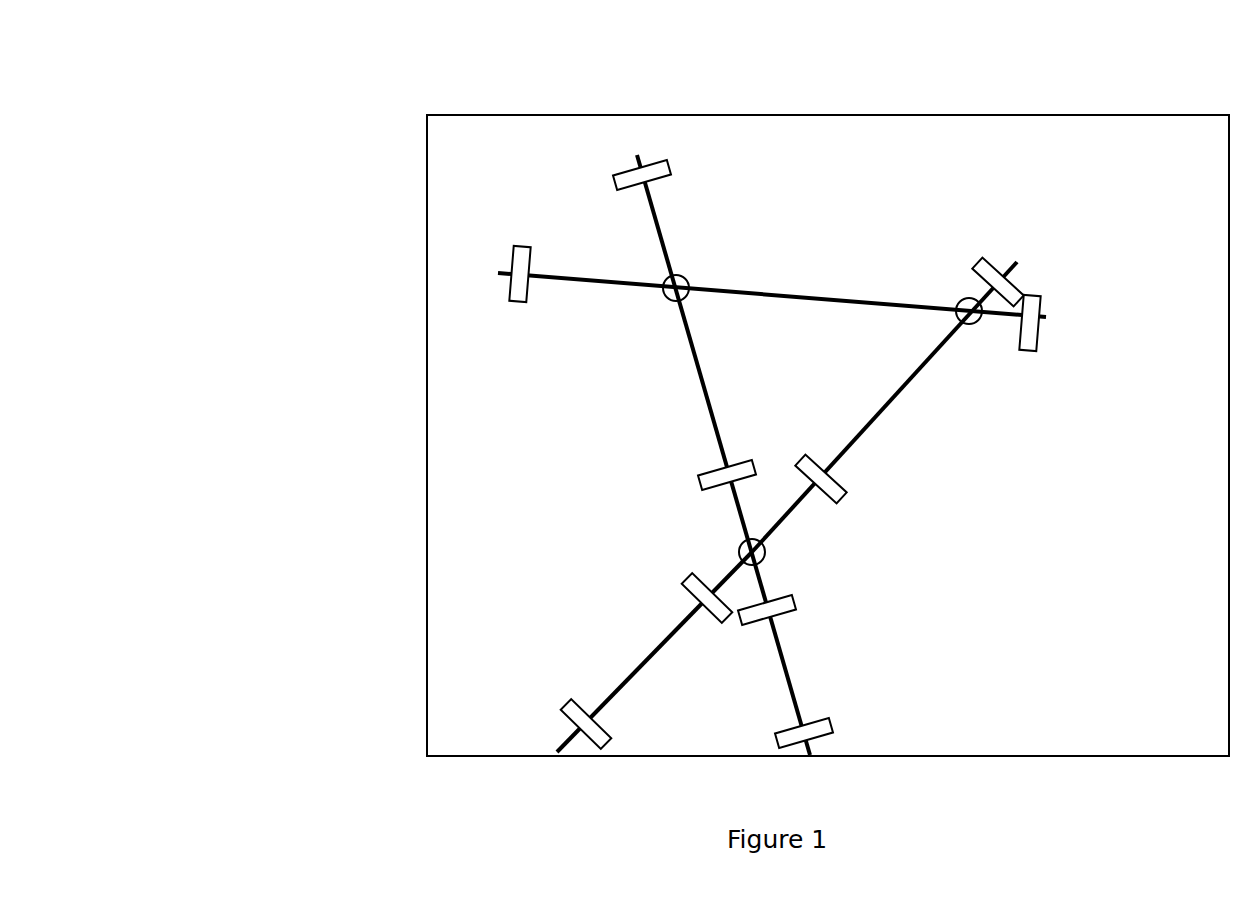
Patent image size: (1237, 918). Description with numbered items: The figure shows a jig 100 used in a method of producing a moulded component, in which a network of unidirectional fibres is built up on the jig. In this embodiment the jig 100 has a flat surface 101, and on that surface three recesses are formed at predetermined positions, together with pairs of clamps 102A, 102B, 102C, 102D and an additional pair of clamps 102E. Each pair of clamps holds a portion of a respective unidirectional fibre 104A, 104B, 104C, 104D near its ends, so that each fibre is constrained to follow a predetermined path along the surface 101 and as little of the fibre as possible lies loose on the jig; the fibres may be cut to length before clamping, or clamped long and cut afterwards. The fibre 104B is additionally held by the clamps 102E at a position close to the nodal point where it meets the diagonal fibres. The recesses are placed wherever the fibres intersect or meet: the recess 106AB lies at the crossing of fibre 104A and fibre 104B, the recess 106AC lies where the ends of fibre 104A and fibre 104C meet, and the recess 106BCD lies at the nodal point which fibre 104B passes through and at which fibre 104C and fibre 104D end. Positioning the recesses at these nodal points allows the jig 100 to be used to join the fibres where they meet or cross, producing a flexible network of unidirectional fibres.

The jig 100 is at (398, 151).
The flat surface 101 is at (475, 136).
The pair of clamps 102A is at (513, 282).
The pair of clamps 102B is at (657, 162).
The pair of clamps 102C is at (983, 260).
The pair of clamps 102D is at (685, 575).
The additional pair of clamps 102E is at (695, 472).
The unidirectional fibre 104A is at (602, 286).
The unidirectional fibre 104B is at (663, 236).
The unidirectional fibre 104C is at (882, 413).
The unidirectional fibre 104D is at (632, 667).
The recess 106AB is at (687, 300).
The recess 106AC is at (957, 313).
The recess 106BCD is at (755, 540).